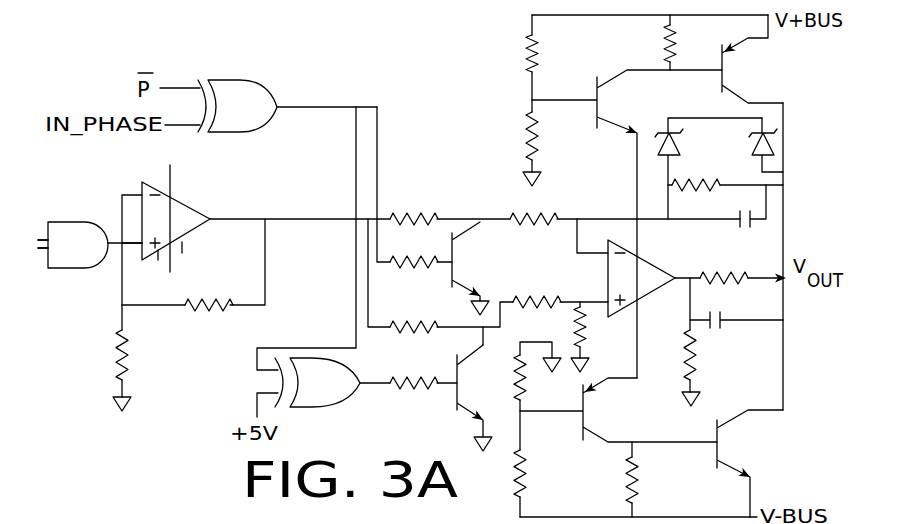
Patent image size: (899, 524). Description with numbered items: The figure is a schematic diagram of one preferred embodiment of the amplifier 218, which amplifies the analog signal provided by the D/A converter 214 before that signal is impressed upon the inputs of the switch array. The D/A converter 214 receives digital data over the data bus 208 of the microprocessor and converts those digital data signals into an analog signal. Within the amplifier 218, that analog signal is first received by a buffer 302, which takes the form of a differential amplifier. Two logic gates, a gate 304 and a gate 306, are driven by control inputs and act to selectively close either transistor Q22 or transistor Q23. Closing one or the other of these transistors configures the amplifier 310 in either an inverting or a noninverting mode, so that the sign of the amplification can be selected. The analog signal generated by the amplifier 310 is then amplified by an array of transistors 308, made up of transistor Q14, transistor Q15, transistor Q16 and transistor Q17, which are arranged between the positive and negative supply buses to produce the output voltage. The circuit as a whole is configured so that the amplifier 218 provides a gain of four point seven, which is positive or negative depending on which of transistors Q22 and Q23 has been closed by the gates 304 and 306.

The D/A converter 214 is at (63, 222).
The data bus 208 is at (42, 252).
The amplifier 218 is at (482, 200).
The buffer 302 is at (190, 203).
The gate 304 is at (256, 66).
The gate 306 is at (325, 408).
The array of transistors 308 is at (497, 465).
The amplifier 310 is at (647, 262).
The transistor Q14 is at (590, 90).
The transistor Q15 is at (724, 62).
The transistor Q16 is at (583, 427).
The transistor Q17 is at (722, 437).
The transistor Q22 is at (486, 261).
The transistor Q23 is at (485, 391).